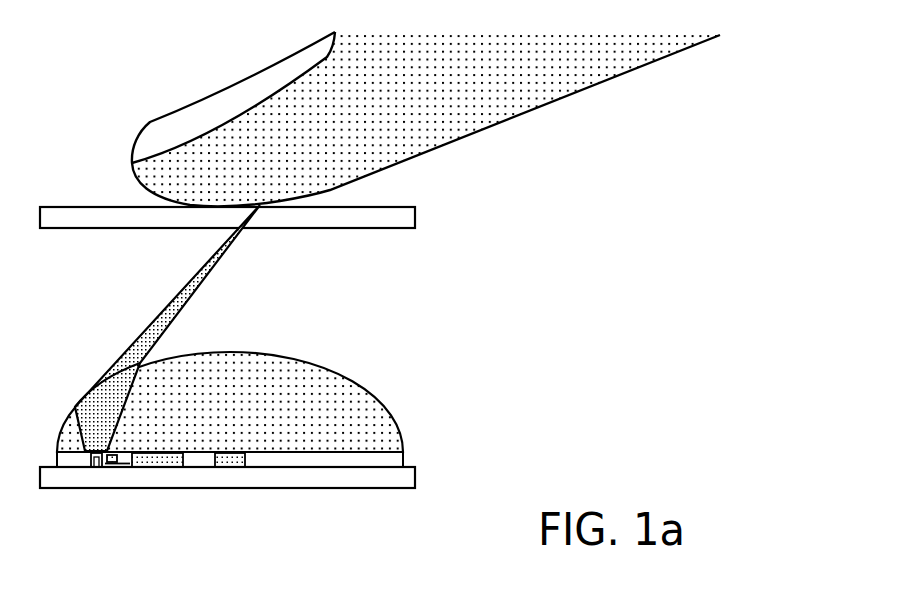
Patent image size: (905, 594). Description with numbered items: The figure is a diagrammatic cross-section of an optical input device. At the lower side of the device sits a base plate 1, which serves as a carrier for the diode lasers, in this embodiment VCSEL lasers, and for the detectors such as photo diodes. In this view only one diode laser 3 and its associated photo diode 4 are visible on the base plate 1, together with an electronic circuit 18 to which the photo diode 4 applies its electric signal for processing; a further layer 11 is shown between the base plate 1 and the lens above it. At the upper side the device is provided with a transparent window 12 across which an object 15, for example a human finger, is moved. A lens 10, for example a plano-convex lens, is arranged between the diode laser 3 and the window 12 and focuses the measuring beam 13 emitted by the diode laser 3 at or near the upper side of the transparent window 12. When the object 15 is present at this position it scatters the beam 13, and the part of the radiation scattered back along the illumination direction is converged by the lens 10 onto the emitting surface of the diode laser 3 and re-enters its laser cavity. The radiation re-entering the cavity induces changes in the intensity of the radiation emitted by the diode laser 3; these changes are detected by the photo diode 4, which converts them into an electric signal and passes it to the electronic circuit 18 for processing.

The base plate 1 is at (407, 475).
The diode laser 3 is at (97, 462).
The photo diode 4 is at (112, 462).
The lens 10 is at (330, 380).
The transparent layer 11 is at (392, 458).
The transparent window 12 is at (415, 217).
The measuring beam 13 is at (162, 307).
The object 15 is at (515, 98).
The electronic circuit 18 is at (163, 462).